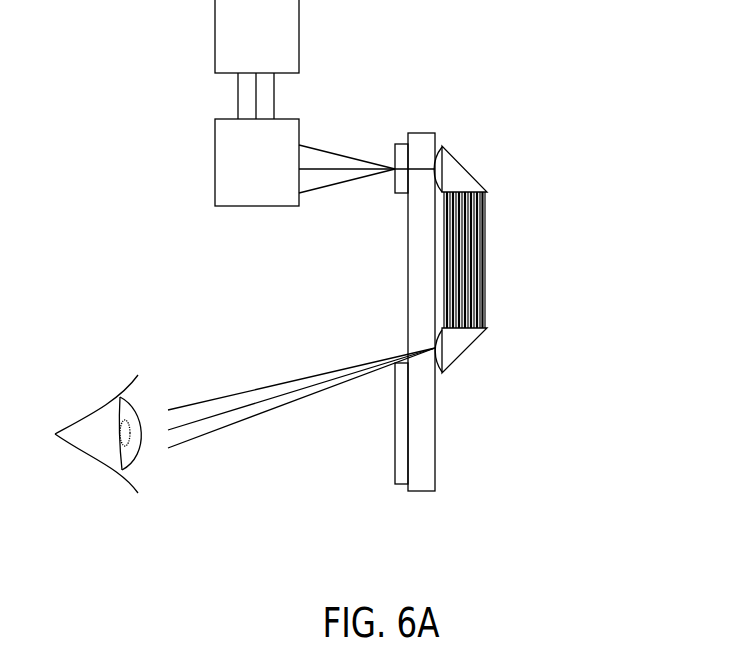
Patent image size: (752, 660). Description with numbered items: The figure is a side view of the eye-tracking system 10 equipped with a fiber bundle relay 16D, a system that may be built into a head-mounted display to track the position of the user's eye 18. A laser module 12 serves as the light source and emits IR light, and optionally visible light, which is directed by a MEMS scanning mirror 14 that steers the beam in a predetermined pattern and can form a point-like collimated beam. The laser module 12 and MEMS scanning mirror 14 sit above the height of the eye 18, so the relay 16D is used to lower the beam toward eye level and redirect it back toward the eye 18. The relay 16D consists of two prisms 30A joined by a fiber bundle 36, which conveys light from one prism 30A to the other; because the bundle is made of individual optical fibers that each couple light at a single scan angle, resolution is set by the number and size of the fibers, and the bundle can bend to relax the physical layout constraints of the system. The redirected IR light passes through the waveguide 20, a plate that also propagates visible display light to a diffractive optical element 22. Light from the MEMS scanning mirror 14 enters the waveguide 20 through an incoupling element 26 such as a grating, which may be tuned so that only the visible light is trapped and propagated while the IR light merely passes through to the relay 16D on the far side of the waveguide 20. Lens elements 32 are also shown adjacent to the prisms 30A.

The eye-tracking system 10 is at (126, 205).
The laser module 12 is at (245, 53).
The MEMS scanning mirror 14 is at (247, 185).
The fiber bundle relay 16D is at (552, 161).
The eye 18 is at (93, 457).
The waveguide 20 is at (424, 132).
The diffractive optical element 22 is at (402, 487).
The incoupling element 26 is at (400, 143).
The prism 30A is at (462, 157).
The lens 32 is at (437, 147).
The fiber bundle 36 is at (490, 259).